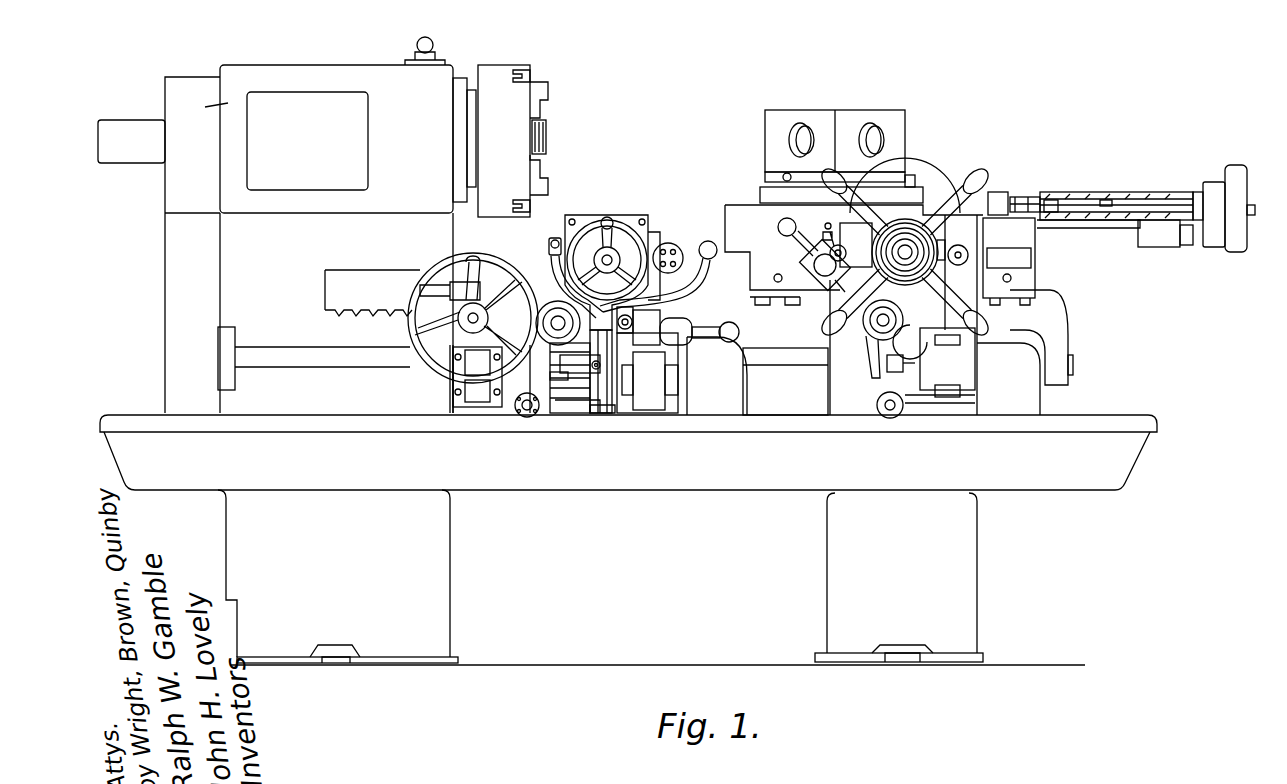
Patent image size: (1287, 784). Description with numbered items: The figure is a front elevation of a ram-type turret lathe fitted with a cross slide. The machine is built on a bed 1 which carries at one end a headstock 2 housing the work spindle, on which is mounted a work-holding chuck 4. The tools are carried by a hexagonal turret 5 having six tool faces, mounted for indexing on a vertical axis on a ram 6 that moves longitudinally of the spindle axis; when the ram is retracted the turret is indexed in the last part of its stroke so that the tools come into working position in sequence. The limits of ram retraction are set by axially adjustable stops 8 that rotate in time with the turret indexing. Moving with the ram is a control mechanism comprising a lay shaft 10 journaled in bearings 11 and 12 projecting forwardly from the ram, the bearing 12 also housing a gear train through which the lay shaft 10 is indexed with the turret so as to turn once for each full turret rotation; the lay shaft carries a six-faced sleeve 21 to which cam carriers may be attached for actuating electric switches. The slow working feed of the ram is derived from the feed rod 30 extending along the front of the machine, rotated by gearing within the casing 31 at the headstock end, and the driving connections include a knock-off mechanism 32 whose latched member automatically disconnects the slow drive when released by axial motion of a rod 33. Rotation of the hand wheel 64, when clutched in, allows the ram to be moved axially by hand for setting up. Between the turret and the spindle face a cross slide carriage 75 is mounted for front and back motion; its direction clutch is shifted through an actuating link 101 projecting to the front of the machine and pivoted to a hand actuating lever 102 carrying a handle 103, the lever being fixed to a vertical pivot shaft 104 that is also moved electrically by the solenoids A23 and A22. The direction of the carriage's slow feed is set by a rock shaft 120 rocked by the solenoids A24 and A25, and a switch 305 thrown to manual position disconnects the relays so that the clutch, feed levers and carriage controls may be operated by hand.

The bed 1 is at (655, 512).
The headstock 2 is at (358, 68).
The work-holding chuck 4 is at (505, 70).
The turret 5 is at (828, 108).
The ram 6 is at (938, 190).
The axially adjustable stops 8 is at (1252, 190).
The lay shaft 10 is at (1028, 196).
The bearing 11 is at (541, 348).
The bearing 12 is at (547, 396).
The sleeve 21 is at (1108, 196).
The feed rod 30 is at (780, 350).
The casing 31 is at (172, 252).
The knock-off mechanism 32 is at (805, 262).
The rod 33 is at (847, 253).
The hand wheel 64 is at (982, 185).
The cross slide carriage 75 is at (636, 214).
The actuating link 101 is at (555, 236).
The hand actuating lever 102 is at (548, 268).
The handle 103 is at (710, 241).
The vertical pivot shaft 104 is at (598, 415).
The rock shaft 120 is at (507, 418).
The switch 305 is at (912, 212).
The solenoid A22 is at (585, 410).
The solenoid A23 is at (565, 415).
The solenoid A24 is at (467, 365).
The solenoid A25 is at (470, 392).